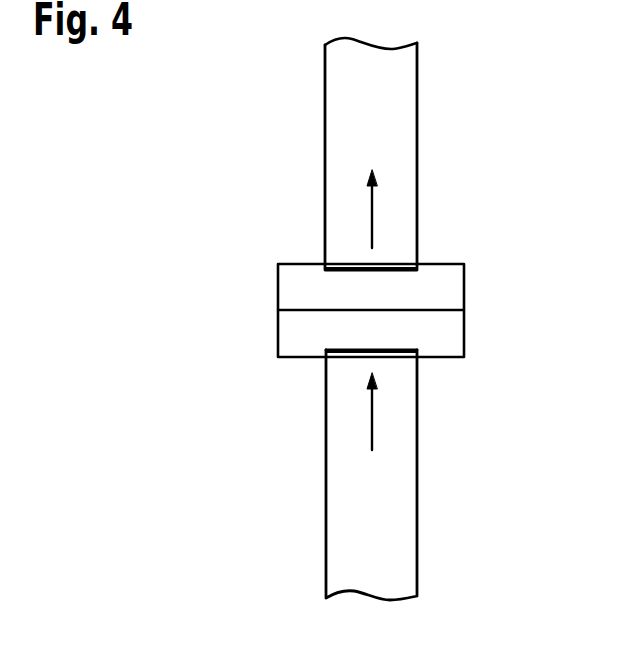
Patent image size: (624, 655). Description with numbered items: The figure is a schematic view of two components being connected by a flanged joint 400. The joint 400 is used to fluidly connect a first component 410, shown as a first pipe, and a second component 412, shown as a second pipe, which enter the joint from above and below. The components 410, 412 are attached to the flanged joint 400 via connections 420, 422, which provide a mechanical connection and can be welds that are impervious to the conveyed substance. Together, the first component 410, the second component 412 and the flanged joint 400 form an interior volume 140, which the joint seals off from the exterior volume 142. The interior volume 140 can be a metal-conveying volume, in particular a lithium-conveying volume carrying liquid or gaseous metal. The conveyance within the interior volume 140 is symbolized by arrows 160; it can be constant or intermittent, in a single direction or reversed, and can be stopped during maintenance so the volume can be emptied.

The interior volume 140 is at (397, 108).
The exterior volume 142 is at (200, 283).
The arrows 160 is at (372, 218).
The flanged joint 400 is at (484, 263).
The first component 410 is at (417, 135).
The second component 412 is at (417, 493).
The connection 420 is at (406, 264).
The connection 422 is at (404, 354).